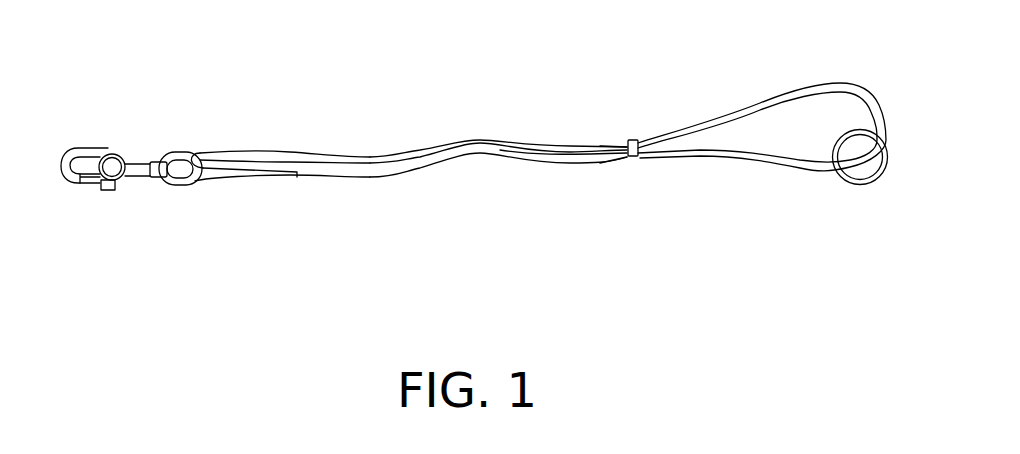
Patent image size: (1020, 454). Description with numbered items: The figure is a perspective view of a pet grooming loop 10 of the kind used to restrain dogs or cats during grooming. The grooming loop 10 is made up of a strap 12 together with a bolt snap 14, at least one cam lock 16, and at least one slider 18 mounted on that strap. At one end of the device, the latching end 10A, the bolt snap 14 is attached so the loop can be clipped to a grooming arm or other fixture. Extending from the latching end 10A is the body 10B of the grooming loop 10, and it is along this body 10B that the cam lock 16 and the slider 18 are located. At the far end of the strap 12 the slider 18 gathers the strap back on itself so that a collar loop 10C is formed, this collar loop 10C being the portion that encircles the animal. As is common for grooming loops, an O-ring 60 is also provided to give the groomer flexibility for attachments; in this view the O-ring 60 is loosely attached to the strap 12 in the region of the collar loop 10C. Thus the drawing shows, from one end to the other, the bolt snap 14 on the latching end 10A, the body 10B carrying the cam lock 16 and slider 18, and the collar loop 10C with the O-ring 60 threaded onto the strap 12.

The grooming loop 10 is at (261, 115).
The latching end 10A is at (223, 193).
The body 10B is at (480, 174).
The collar loop 10C is at (740, 184).
The strap 12 is at (362, 168).
The bolt snap 14 is at (100, 147).
The cam lock 16 is at (620, 140).
The slider 18 is at (632, 140).
The O-ring 60 is at (877, 183).